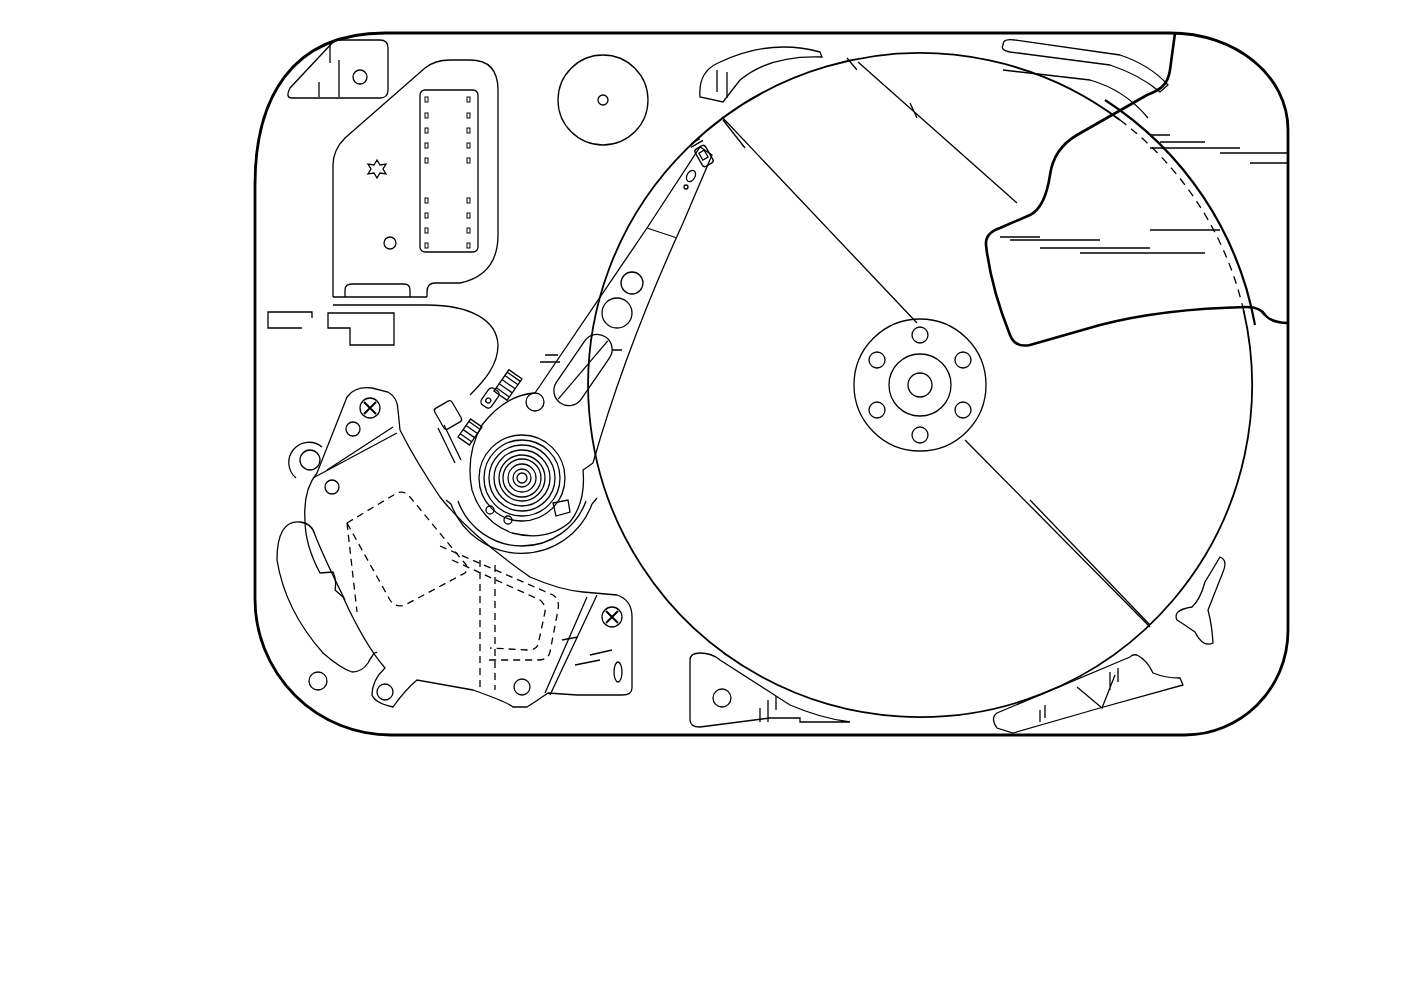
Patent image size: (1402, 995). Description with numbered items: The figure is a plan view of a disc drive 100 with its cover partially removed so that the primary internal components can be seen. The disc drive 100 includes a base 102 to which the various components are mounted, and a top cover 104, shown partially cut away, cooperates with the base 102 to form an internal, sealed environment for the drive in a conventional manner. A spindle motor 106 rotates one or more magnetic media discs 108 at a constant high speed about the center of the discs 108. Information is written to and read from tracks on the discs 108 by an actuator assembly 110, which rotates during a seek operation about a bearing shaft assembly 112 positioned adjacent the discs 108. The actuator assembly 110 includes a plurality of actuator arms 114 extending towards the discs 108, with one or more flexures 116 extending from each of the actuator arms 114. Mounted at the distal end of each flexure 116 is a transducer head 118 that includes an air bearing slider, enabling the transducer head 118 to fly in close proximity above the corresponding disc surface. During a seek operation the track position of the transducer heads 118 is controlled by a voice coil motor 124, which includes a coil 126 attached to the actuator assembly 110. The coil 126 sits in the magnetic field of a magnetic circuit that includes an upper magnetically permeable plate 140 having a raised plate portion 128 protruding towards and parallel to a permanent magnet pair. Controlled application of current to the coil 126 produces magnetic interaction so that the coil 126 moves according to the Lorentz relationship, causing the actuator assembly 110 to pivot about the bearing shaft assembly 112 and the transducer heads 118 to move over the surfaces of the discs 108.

The disc drive 100 is at (192, 670).
The base 102 is at (653, 712).
The top cover 104 is at (1258, 168).
The spindle motor 106 is at (920, 385).
The magnetic media disc 108 is at (892, 657).
The actuator assembly 110 is at (626, 374).
The bearing shaft assembly 112 is at (522, 478).
The actuator arm 114 is at (643, 322).
The flexure 116 is at (683, 225).
The transducer head 118 is at (712, 180).
The voice coil motor 124 is at (484, 698).
The coil 126 is at (400, 690).
The raised plate portion 128 is at (512, 662).
The upper magnetically permeable plate 140 is at (328, 510).